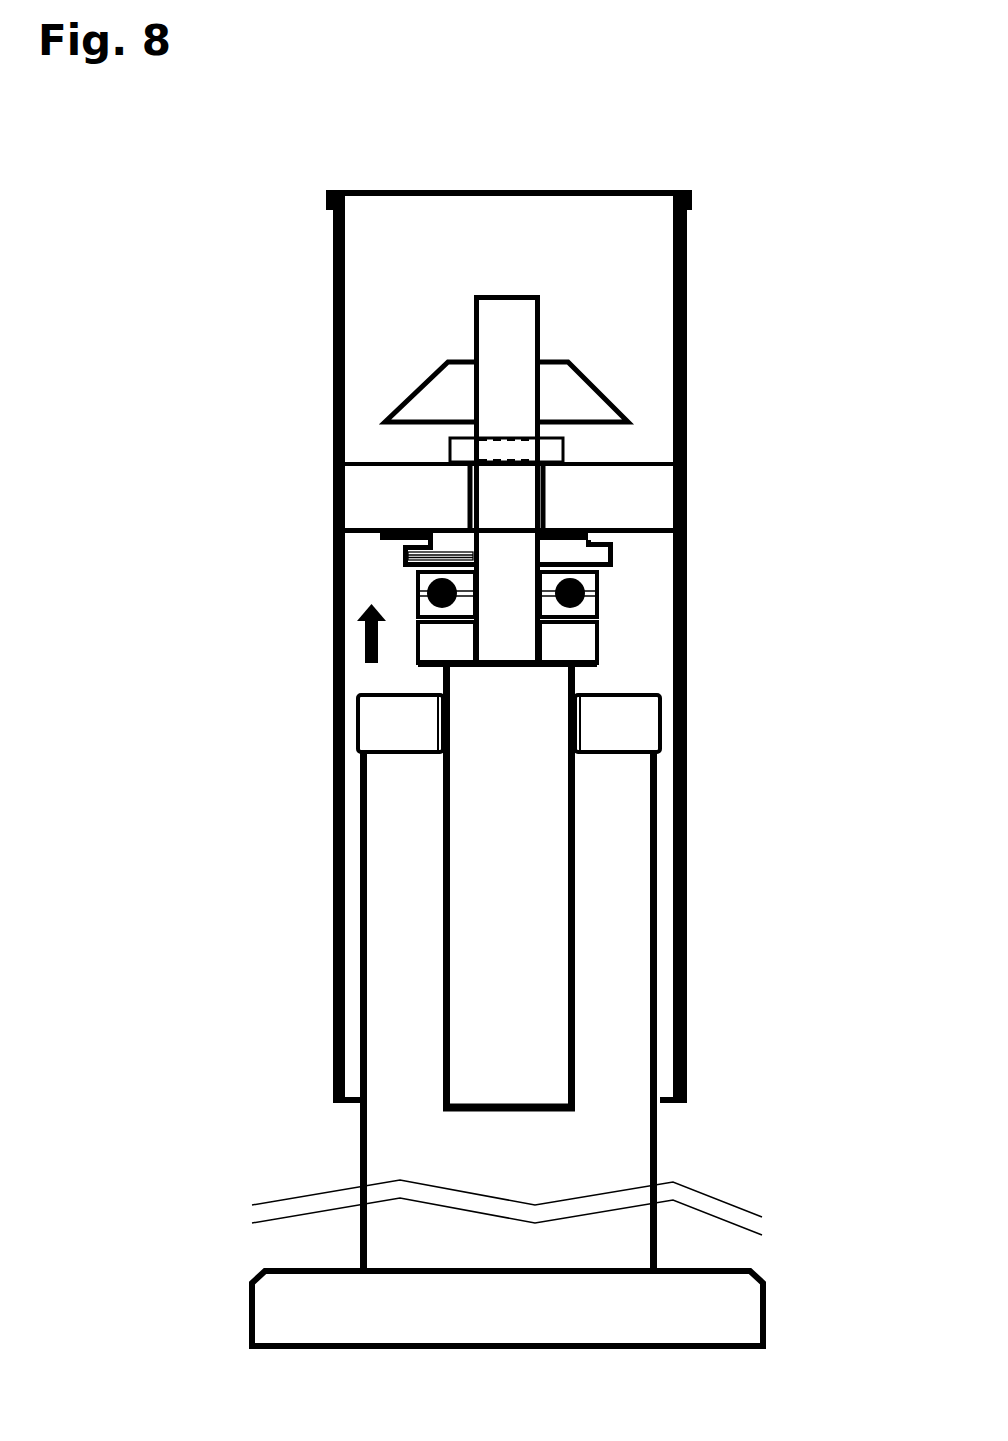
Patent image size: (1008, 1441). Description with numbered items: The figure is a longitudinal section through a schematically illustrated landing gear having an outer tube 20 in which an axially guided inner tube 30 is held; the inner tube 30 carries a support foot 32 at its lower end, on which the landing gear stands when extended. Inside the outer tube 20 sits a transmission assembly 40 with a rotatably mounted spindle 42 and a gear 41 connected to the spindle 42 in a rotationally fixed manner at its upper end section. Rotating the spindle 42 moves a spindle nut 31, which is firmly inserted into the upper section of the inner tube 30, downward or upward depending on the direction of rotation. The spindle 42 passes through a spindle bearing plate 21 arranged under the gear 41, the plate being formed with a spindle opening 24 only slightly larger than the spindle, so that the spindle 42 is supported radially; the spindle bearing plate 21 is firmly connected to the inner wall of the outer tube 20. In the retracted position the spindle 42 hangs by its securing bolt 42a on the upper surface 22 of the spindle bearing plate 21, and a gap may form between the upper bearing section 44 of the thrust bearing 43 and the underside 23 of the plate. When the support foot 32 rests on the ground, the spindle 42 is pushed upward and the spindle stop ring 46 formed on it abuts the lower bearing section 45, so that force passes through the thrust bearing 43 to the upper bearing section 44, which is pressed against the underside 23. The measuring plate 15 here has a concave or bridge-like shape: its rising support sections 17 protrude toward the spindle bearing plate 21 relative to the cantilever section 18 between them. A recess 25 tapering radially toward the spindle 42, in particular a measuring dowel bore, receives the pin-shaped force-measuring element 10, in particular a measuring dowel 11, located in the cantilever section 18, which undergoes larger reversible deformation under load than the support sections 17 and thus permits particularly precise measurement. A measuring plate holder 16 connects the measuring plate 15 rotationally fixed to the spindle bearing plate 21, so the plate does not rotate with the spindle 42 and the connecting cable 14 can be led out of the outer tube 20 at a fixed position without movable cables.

The force-measuring element 10 is at (447, 532).
The measuring dowel 11 is at (506, 497).
The connecting cable 14 is at (408, 557).
The measuring plate 15 is at (613, 583).
The measuring plate holder 16 is at (380, 536).
The support sections 17 is at (638, 540).
The cantilever section 18 is at (578, 530).
The outer tube 20 is at (687, 265).
The spindle bearing plate 21 is at (657, 477).
The upper surface 22 is at (687, 422).
The underside 23 is at (637, 560).
The spindle opening 24 is at (463, 485).
The recess 25 is at (405, 567).
The inner tube 30 is at (658, 1143).
The spindle nut 31 is at (660, 728).
The support foot 32 is at (745, 1298).
The transmission assembly 40 is at (576, 308).
The gear 41 is at (423, 375).
The spindle 42 is at (473, 323).
The securing bolt 42a is at (563, 445).
The thrust bearing 43 is at (673, 657).
The upper bearing section 44 is at (620, 603).
The lower bearing section 45 is at (688, 658).
The spindle stop ring 46 is at (430, 652).